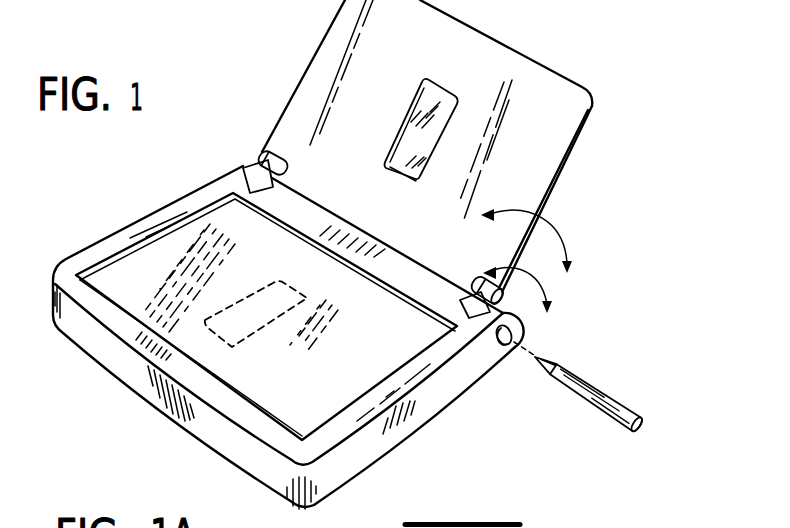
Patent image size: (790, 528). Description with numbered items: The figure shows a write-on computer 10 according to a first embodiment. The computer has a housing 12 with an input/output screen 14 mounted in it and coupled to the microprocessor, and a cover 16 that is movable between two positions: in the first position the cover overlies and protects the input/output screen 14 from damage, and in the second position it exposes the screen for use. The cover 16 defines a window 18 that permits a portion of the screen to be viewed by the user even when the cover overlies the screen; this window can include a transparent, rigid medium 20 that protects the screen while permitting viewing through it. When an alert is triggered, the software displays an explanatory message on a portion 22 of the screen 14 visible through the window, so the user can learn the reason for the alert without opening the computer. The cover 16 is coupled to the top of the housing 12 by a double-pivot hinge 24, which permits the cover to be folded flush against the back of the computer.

The write-on computer 10 is at (626, 117).
The housing 12 is at (153, 218).
The input/output screen 14 is at (319, 396).
The cover 16 is at (560, 182).
The window 18 is at (448, 104).
The transparent, rigid medium 20 is at (404, 141).
The portion of the screen 22 is at (282, 321).
The double-pivot hinge 24 is at (555, 334).